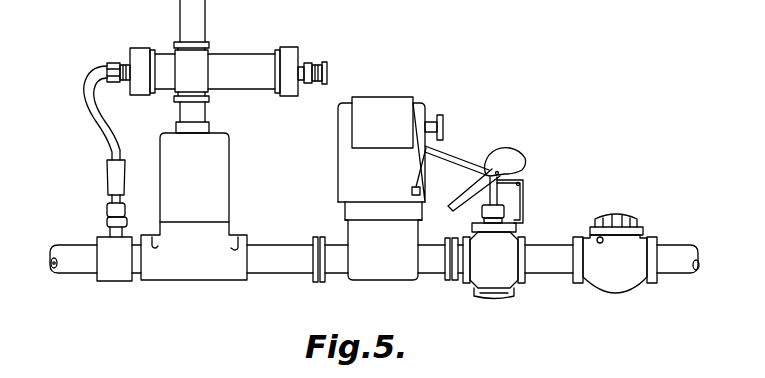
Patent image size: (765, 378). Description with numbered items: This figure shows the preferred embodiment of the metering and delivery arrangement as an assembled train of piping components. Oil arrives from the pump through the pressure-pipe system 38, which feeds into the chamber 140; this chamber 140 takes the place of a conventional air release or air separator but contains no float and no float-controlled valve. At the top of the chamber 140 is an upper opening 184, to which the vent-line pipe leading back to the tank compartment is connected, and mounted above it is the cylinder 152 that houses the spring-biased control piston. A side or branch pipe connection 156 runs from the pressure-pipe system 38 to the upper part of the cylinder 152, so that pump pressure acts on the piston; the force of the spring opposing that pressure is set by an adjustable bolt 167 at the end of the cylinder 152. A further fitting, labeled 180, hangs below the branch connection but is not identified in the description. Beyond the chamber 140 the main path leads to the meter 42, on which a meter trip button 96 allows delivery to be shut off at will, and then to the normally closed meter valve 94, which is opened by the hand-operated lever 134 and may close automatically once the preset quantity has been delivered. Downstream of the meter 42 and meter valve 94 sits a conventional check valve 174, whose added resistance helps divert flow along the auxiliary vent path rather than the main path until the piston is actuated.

The pressure-pipe system 38 is at (83, 263).
The meter 42 is at (387, 112).
The meter valve 94 is at (510, 278).
The meter trip button 96 is at (440, 160).
The hand-operated lever 134 is at (453, 210).
The chamber 140 is at (215, 168).
The cylinder 152 is at (235, 62).
The side or branch pipe connection 156 is at (90, 83).
The adjustable bolt 167 is at (325, 67).
The check valve 174 is at (623, 278).
The drain fitting 180 is at (110, 171).
The upper opening 184 is at (202, 128).